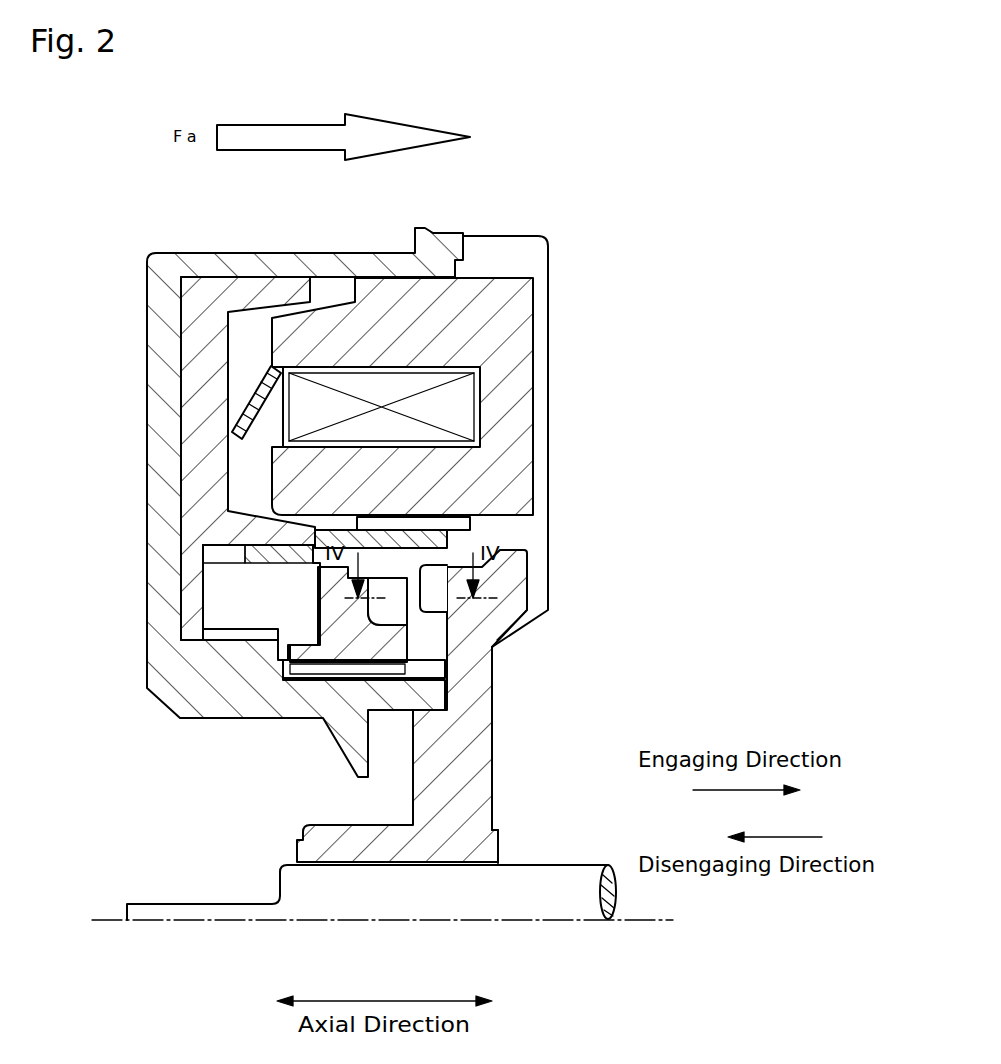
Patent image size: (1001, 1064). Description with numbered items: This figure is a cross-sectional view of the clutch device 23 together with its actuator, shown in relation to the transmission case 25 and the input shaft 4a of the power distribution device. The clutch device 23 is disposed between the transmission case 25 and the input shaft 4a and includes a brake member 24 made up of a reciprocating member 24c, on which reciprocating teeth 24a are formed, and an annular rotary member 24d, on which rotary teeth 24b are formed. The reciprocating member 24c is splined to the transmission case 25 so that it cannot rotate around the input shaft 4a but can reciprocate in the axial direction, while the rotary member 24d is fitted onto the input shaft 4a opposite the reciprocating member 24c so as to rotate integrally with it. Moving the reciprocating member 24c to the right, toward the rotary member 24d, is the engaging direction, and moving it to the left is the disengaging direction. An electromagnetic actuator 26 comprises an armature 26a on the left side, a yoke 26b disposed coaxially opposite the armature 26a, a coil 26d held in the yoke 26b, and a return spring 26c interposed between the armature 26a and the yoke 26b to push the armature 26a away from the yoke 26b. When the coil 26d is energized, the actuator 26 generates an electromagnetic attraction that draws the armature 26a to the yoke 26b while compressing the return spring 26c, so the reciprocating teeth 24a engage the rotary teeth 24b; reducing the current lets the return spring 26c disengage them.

The clutch device 23 is at (592, 167).
The brake member 24 is at (444, 678).
The reciprocating teeth 24a is at (382, 612).
The rotary teeth 24b is at (433, 598).
The reciprocating member 24c is at (308, 655).
The rotary member 24d is at (512, 558).
The transmission case 25 is at (283, 266).
The electromagnetic actuator 26 is at (351, 415).
The armature 26a is at (233, 290).
The yoke 26b is at (509, 298).
The return spring 26c is at (248, 402).
The coil 26d is at (463, 402).
The input shaft 4a is at (507, 890).